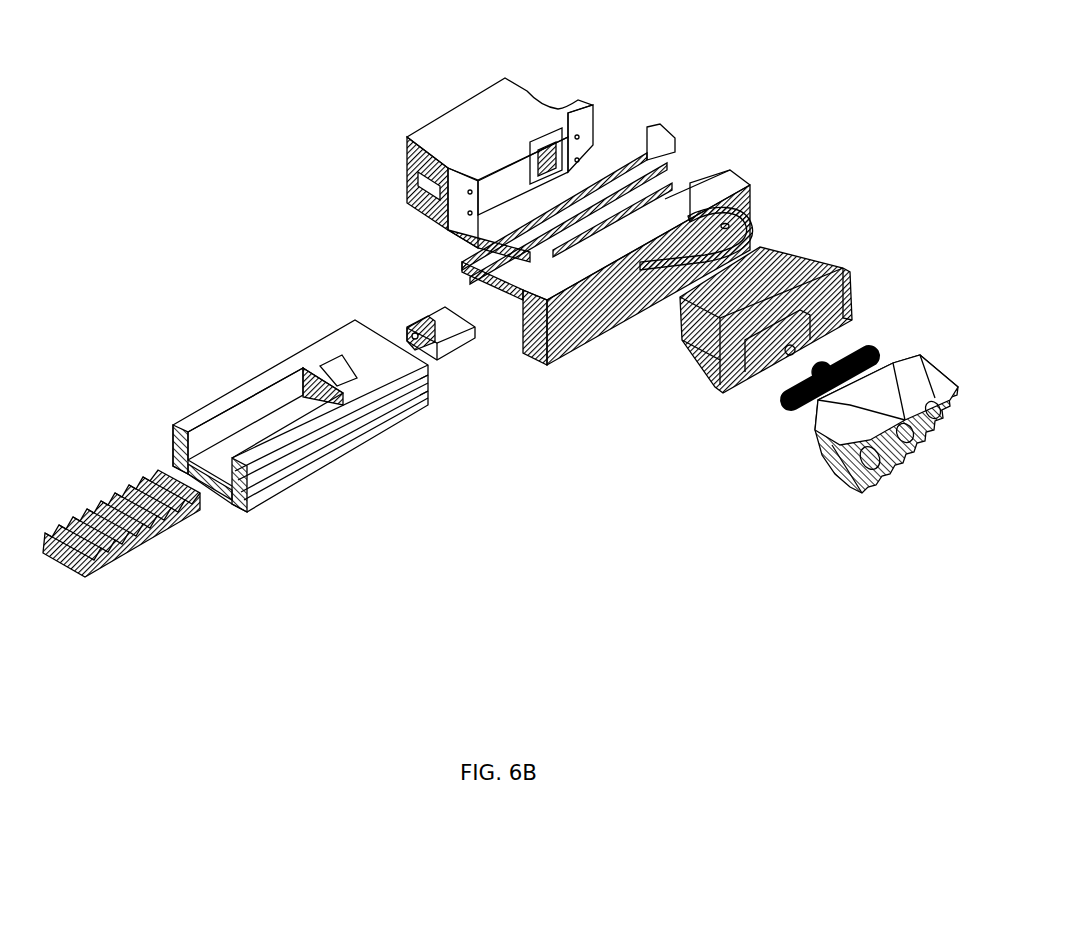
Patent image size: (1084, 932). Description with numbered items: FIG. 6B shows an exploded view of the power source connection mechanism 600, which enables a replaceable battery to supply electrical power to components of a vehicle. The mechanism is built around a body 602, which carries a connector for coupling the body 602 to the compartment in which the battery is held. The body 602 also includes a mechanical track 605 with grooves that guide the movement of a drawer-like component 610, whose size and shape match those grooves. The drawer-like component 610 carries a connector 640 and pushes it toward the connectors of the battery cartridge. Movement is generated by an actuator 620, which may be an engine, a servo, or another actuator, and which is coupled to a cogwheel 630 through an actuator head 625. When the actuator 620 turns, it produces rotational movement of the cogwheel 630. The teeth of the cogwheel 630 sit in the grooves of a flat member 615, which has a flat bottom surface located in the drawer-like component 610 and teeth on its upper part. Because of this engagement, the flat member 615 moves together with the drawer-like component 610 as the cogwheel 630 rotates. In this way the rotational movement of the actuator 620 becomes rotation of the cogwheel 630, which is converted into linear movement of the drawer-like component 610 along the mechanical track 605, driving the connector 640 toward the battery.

The power source connection mechanism 600 is at (548, 72).
The body 602 is at (440, 128).
The mechanical track 605 is at (671, 183).
The drawer-like component 610 is at (250, 394).
The flat member 615 is at (118, 508).
The actuator 620 is at (702, 356).
The actuator head 625 is at (782, 408).
The cogwheel 630 is at (838, 460).
The connector 640 is at (421, 324).